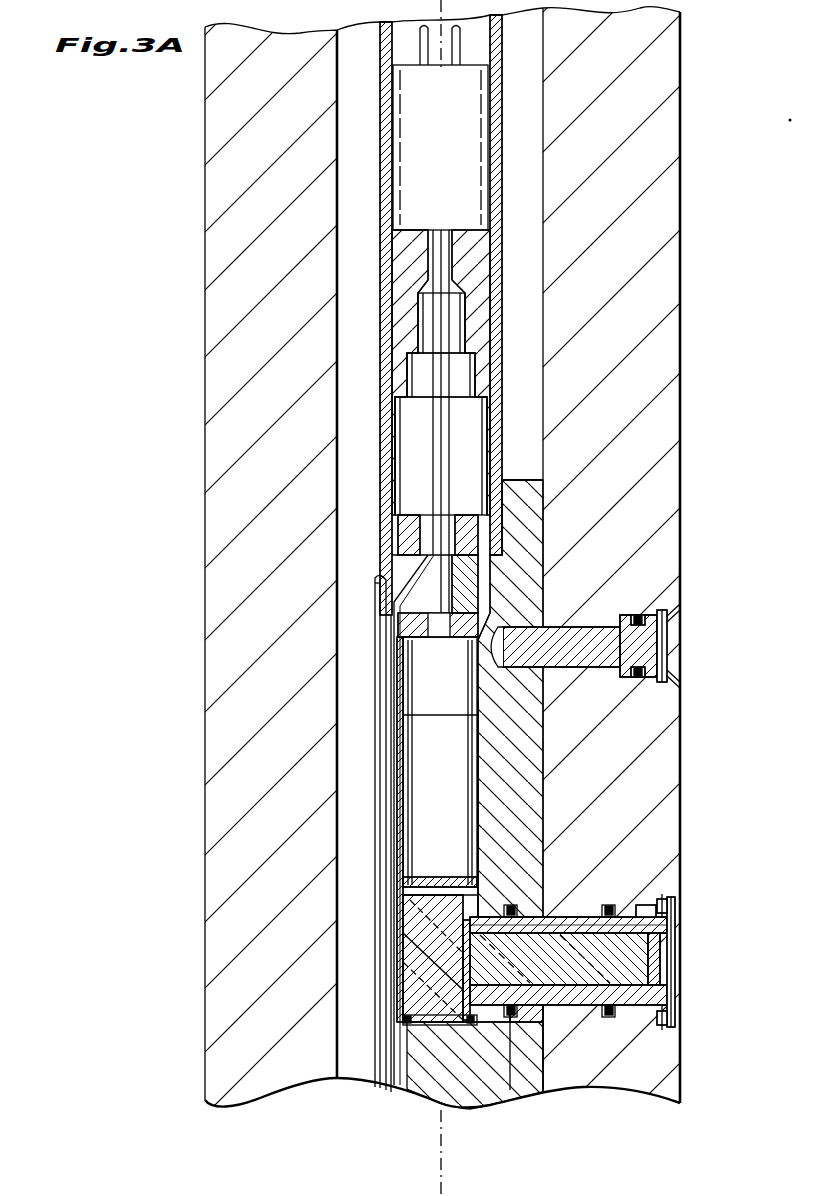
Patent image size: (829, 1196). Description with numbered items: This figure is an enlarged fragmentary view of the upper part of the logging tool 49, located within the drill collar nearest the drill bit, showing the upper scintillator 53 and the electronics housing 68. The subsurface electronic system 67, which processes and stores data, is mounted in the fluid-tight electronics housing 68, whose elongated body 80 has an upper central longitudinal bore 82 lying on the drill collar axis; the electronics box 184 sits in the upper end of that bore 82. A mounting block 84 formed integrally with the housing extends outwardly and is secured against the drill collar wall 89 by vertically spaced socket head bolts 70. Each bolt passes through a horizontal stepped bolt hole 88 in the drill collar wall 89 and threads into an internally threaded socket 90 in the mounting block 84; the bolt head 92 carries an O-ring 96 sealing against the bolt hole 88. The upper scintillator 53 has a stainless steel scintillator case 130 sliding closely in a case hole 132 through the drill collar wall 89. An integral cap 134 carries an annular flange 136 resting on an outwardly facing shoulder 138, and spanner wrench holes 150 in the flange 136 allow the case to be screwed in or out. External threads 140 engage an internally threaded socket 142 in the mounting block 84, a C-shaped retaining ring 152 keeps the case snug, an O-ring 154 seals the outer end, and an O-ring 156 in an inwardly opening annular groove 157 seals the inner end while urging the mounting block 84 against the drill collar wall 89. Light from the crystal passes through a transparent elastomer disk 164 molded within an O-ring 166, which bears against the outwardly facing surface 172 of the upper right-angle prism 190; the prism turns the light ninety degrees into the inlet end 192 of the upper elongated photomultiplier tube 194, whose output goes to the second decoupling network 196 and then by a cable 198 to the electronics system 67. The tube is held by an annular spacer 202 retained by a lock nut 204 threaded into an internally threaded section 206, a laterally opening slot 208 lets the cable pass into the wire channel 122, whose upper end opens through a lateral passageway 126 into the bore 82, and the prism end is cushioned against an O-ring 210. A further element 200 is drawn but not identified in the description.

The logging tool 49 is at (358, 215).
The upper scintillator 53 is at (699, 958).
The subsurface electronic system 67 is at (484, 193).
The electronics housing 68 is at (367, 145).
The socket head bolts 70 is at (592, 618).
The elongated body 80 is at (358, 470).
The upper central longitudinal bore 82 is at (482, 431).
The mounting block 84 is at (530, 478).
The stepped bolt hole 88 is at (606, 668).
The drill collar wall 89 is at (668, 290).
The internally threaded socket 90 is at (505, 652).
The bolt head 92 is at (626, 678).
The O-ring 96 is at (640, 614).
The wire channel 122 is at (390, 1030).
The lateral passageway 126 is at (378, 584).
The scintillator case 130 is at (570, 1022).
The case hole 132 is at (596, 895).
The cap 134 is at (672, 930).
The annular flange 136 is at (656, 912).
The outwardly facing shoulder 138 is at (620, 1016).
The external threads 140 is at (553, 808).
The internally threaded socket 142 is at (458, 1092).
The spanner wrench holes 150 is at (658, 900).
The C-shaped retaining ring 152 is at (666, 903).
The O-ring 154 is at (610, 1020).
The O-ring 156 is at (510, 905).
The inwardly opening annular groove 157 is at (505, 1013).
The disk 164 is at (475, 946).
The O-ring 166 is at (463, 887).
The outwardly facing surface 172 is at (470, 968).
The electronics box 184 is at (402, 108).
The upper right-angle prism 190 is at (409, 975).
The inlet end 192 is at (403, 916).
The upper elongated photomultiplier tube 194 is at (478, 773).
The second decoupling network 196 is at (430, 668).
The cable 198 is at (448, 468).
The housing bottom band 200 is at (402, 893).
The annular spacer 202 is at (478, 580).
The lock nut 204 is at (505, 528).
The internally threaded section 206 is at (486, 553).
The laterally opening slot 208 is at (398, 604).
The O-rings 210 is at (408, 1032).